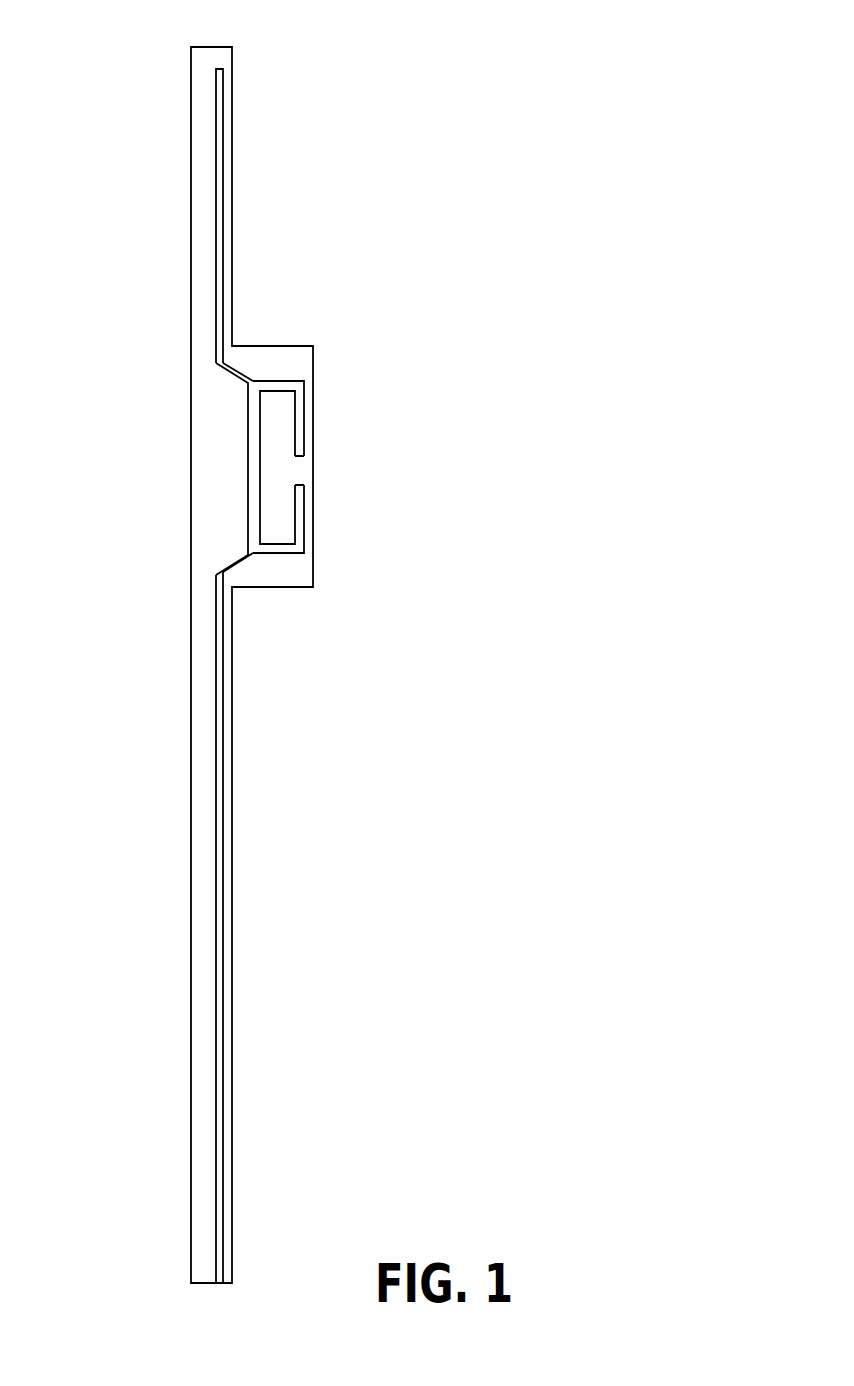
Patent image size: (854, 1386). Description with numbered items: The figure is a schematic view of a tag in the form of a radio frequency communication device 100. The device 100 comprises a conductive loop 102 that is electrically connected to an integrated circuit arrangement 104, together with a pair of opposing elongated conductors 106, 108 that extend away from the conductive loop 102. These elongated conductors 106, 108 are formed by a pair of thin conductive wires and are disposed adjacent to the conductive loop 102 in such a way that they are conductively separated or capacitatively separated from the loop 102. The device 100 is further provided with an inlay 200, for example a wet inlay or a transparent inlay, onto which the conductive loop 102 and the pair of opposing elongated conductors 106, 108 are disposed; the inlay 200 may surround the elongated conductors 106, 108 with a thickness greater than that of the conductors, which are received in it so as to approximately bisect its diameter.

The radio frequency communication device 100 is at (358, 68).
The conductive loop 102 is at (302, 428).
The integrated circuit arrangement 104 is at (297, 472).
The elongated conductor 106 is at (216, 198).
The elongated conductor 108 is at (215, 977).
The inlay 200 is at (233, 938).